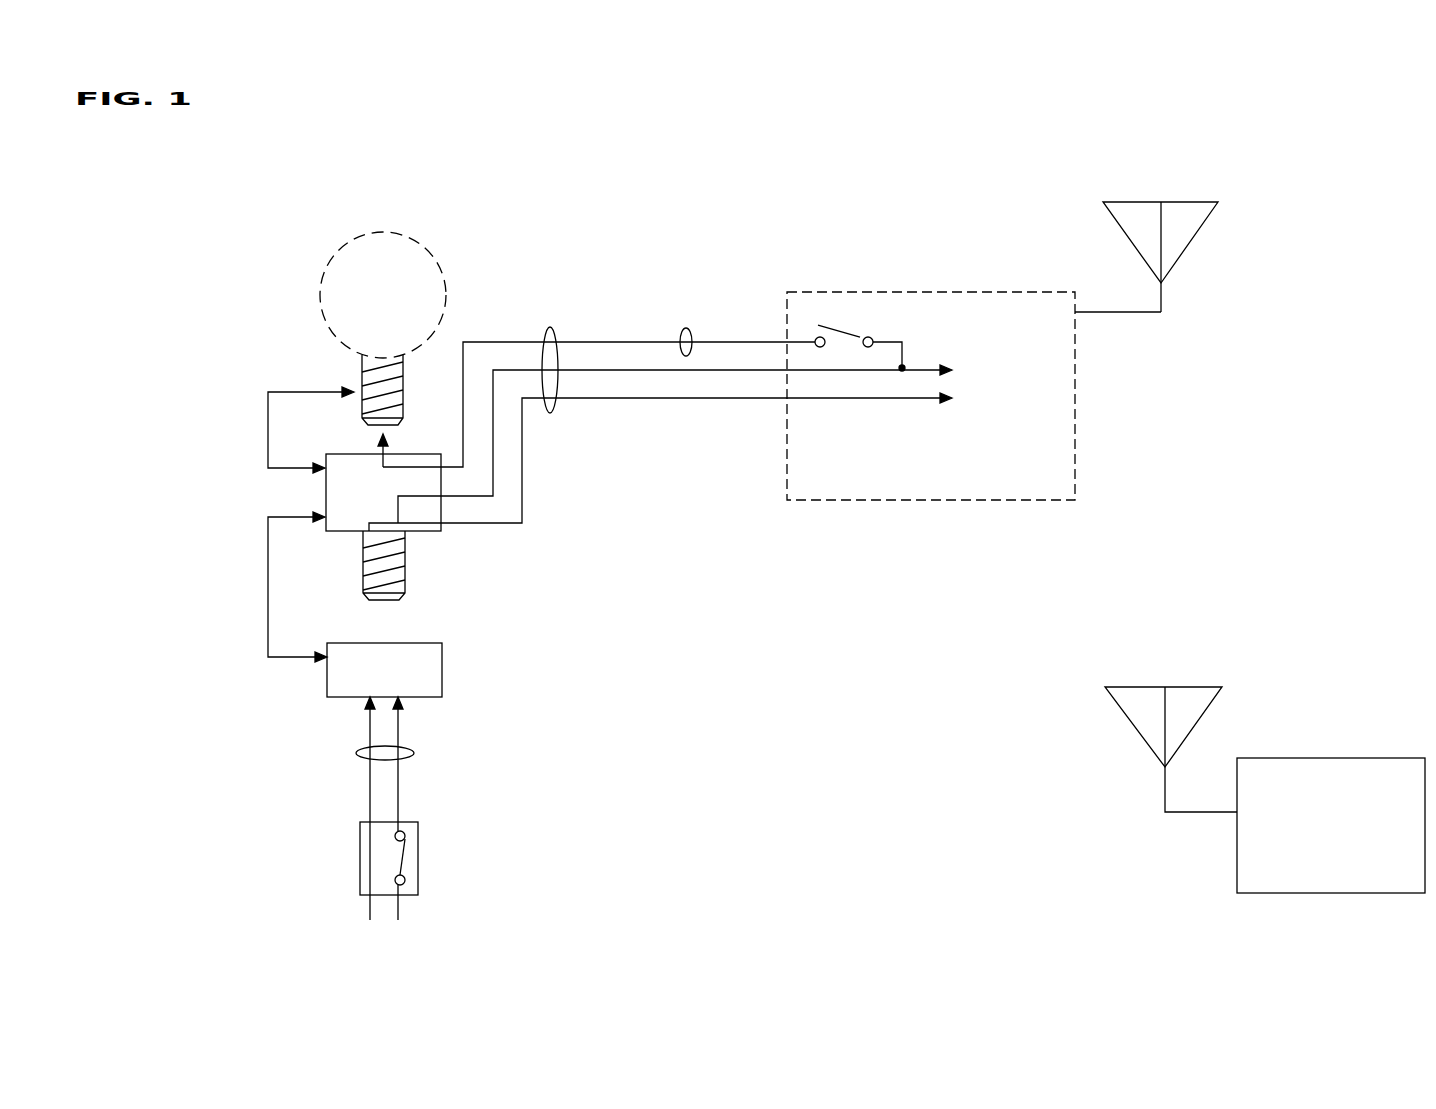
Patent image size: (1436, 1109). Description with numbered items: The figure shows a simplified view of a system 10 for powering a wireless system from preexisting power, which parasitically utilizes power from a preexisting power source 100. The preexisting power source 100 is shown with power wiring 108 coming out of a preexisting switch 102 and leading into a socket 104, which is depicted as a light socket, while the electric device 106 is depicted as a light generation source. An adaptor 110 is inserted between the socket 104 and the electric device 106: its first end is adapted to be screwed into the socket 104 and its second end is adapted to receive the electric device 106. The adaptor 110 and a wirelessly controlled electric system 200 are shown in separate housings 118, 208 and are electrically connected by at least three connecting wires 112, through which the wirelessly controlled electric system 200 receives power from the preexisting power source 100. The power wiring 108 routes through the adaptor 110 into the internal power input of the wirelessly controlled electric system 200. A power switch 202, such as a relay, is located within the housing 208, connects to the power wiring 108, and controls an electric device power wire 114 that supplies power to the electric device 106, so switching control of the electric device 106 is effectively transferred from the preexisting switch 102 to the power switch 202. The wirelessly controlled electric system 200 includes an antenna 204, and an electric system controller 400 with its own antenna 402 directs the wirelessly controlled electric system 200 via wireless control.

The system 10 is at (1248, 432).
The preexisting power source 100 is at (448, 940).
The preexisting switch 102 is at (448, 842).
The socket 104 is at (448, 662).
The electric device 106 is at (447, 247).
The power wiring 108 is at (448, 746).
The adaptor 110 is at (441, 545).
The connecting wires 112 is at (558, 420).
The electric device power wire 114 is at (684, 328).
The housing 118 is at (325, 487).
The wirelessly controlled electric system 200 is at (808, 218).
The power switch 202 is at (817, 315).
The antenna 204 is at (1232, 213).
The housing 208 is at (1103, 360).
The electric system controller 400 is at (1217, 849).
The antenna 402 is at (1230, 700).